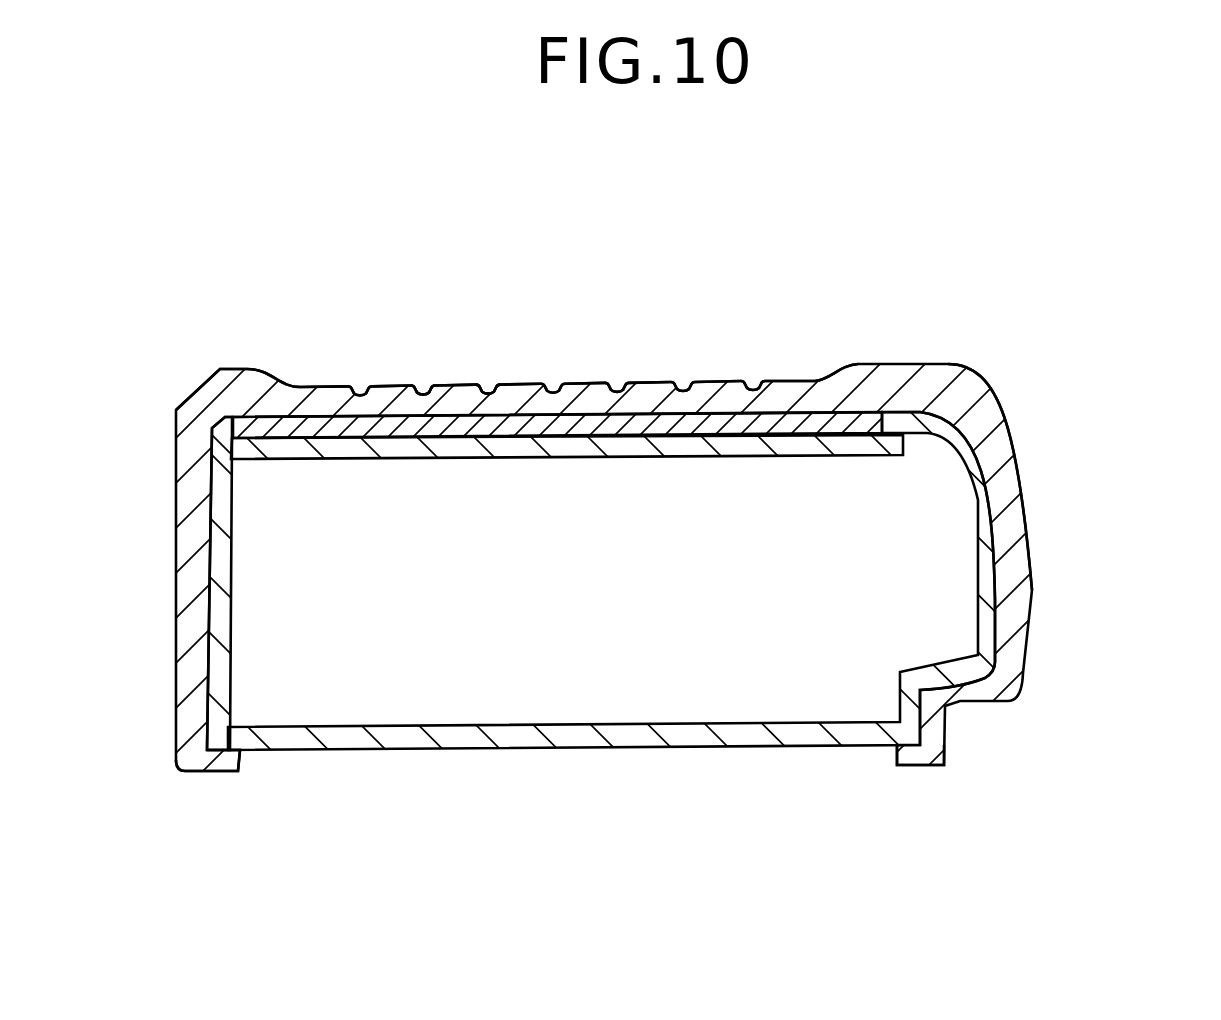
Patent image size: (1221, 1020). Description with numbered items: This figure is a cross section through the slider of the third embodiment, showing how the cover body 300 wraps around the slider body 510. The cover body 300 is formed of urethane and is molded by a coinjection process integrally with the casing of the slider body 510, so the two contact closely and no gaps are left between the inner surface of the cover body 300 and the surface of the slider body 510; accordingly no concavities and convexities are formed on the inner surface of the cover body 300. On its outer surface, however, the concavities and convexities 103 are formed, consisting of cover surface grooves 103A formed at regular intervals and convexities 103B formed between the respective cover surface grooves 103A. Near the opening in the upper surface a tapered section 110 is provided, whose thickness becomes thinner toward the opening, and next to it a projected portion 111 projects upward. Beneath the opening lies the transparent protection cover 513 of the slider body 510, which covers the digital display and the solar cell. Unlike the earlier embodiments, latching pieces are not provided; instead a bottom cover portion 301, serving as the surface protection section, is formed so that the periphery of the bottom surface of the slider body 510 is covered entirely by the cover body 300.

The cover body 300 is at (1086, 493).
The tapered section 110 is at (288, 378).
The projected portion 111 is at (246, 367).
The concavities and convexities 103 is at (545, 299).
The cover surface grooves 103A is at (423, 391).
The convexities 103B is at (490, 391).
The transparent protection cover 513 is at (662, 420).
The slider body 510 is at (757, 750).
The bottom cover portion 301 is at (215, 772).